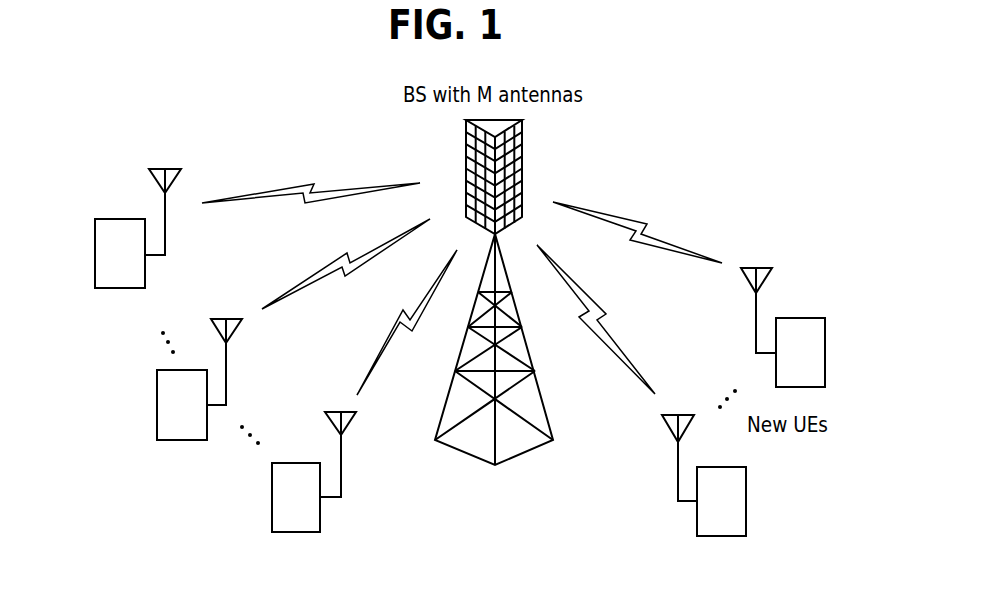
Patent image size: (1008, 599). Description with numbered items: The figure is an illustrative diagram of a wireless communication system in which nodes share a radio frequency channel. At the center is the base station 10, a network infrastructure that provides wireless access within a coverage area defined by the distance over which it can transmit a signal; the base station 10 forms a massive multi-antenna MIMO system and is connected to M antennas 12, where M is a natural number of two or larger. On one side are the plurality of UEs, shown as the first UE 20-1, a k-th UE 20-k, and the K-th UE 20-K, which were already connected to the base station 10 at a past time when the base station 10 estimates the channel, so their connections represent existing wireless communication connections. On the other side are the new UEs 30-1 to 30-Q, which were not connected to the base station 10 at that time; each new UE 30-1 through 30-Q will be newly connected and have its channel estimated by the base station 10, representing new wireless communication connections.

The base station 10 is at (508, 443).
The M antennas 12 is at (522, 152).
The UE 20-1 is at (95, 255).
The k-th UE 20-k is at (157, 406).
The K-th UE 20-K is at (272, 504).
The new UE 30-1 is at (746, 501).
The Q-th new UE 30-Q is at (825, 353).